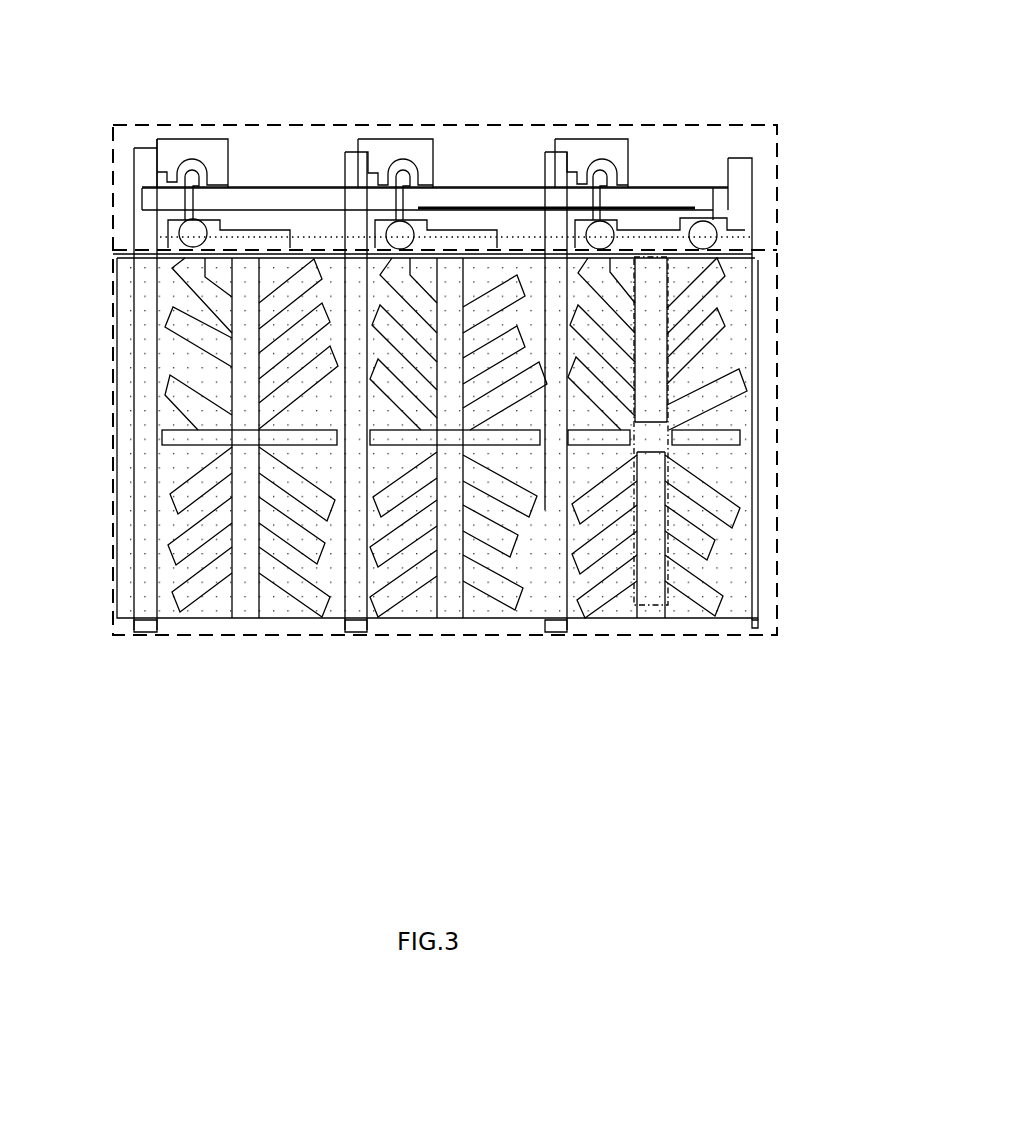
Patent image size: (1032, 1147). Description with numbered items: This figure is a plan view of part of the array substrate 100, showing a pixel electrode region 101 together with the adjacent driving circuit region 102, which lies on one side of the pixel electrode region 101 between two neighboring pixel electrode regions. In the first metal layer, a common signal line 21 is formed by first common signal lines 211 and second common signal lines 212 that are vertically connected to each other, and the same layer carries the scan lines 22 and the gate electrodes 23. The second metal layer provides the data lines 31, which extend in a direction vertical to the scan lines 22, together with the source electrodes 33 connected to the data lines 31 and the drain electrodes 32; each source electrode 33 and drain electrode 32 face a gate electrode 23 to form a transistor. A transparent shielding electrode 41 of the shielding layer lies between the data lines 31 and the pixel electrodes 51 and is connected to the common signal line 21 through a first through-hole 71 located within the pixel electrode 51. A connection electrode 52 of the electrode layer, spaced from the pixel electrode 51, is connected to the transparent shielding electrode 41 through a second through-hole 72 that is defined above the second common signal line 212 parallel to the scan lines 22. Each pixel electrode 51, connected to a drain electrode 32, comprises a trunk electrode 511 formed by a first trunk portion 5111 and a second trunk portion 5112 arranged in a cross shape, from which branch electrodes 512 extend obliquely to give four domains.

The array substrate 100 is at (506, 25).
The pixel electrode region 101 is at (769, 377).
The driving circuit region 102 is at (760, 188).
The common signal line 21 is at (855, 232).
The first common signal line 211 is at (745, 240).
The second common signal line 212 is at (668, 297).
The scan line 22 is at (740, 190).
The gate electrode 23 is at (377, 147).
The data line 31 is at (743, 607).
The drain electrode 32 is at (191, 200).
The source electrode 33 is at (180, 170).
The transparent shielding electrode 41 is at (720, 572).
The pixel electrode 51 is at (496, 507).
The trunk electrode 511 is at (448, 486).
The first trunk portion 5111 is at (455, 480).
The second trunk portion 5112 is at (392, 435).
The branch electrode 512 is at (515, 485).
The connection electrode 52 is at (493, 197).
The first through-hole 71 is at (670, 442).
The second through-hole 72 is at (703, 228).